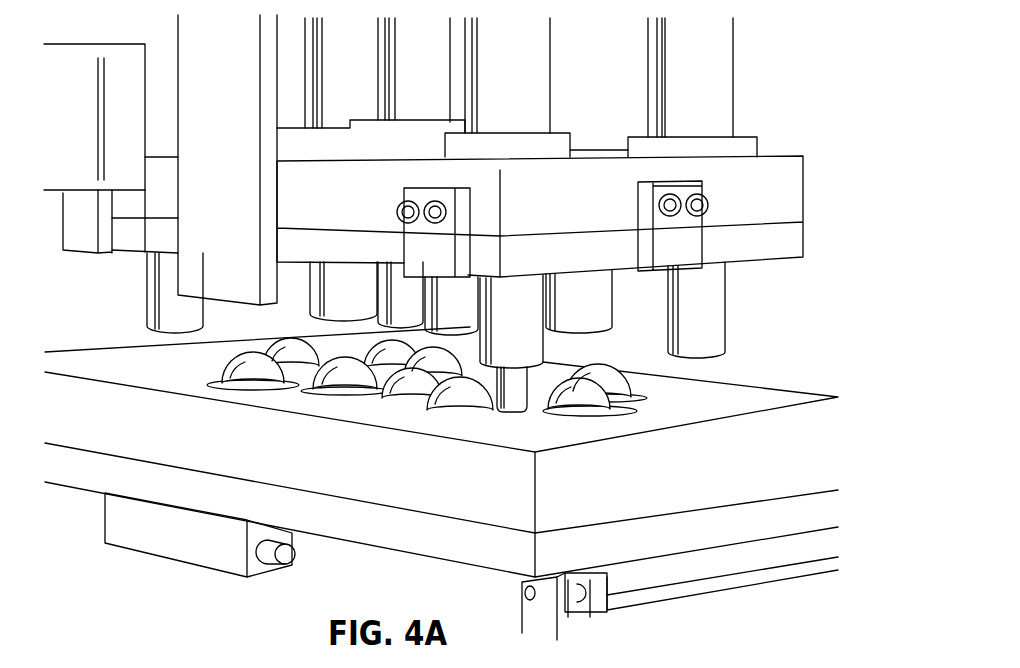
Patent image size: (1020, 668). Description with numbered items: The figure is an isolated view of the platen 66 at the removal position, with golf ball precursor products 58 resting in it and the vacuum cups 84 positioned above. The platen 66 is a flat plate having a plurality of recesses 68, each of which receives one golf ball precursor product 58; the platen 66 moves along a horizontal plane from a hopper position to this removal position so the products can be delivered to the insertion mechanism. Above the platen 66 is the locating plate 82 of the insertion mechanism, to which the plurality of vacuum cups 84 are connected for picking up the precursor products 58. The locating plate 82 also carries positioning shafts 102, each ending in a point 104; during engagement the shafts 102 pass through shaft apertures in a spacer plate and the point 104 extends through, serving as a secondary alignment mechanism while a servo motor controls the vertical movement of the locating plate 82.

The golf ball precursor product 58 is at (348, 386).
The platen 66 is at (775, 393).
The recess 68 is at (197, 375).
The locating plate 82 is at (800, 235).
The vacuum cup 84 is at (388, 292).
The positioning shaft 102 is at (518, 293).
The point 104 is at (530, 406).